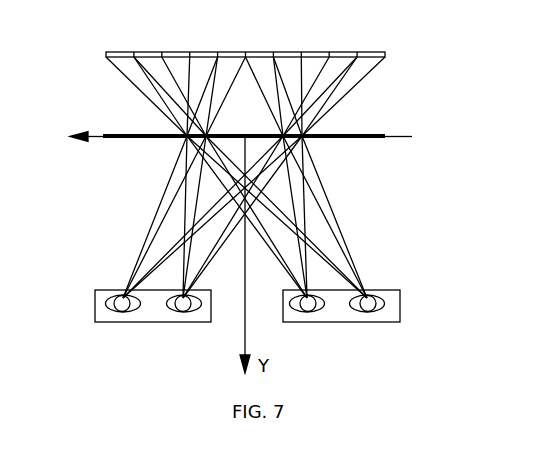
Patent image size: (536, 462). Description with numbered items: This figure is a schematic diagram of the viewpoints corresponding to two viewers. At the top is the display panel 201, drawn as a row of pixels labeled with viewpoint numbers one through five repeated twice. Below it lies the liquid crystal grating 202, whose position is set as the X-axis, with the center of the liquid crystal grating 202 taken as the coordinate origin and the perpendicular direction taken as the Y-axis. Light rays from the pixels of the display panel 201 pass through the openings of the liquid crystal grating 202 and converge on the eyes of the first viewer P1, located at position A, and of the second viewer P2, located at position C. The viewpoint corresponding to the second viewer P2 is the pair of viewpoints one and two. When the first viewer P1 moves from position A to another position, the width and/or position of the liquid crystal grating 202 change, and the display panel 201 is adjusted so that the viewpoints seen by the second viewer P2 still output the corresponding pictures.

The display panel 201 is at (271, 31).
The liquid crystal grating 202 is at (254, 141).
The first viewer P1 is at (133, 275).
The second viewer P2 is at (361, 275).